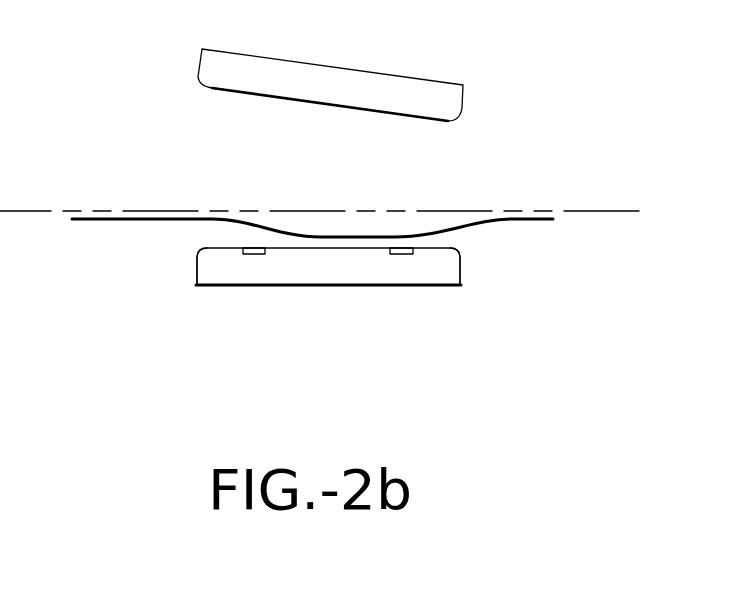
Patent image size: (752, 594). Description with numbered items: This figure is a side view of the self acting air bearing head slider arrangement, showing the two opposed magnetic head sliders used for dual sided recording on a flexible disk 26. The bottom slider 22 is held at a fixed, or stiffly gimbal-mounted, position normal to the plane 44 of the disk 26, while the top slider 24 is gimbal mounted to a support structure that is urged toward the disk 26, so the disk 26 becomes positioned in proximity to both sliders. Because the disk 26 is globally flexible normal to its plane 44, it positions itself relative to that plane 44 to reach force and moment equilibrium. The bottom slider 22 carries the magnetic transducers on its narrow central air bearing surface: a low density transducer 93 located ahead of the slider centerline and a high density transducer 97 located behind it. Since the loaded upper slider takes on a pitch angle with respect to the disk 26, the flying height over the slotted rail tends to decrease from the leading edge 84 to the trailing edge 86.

The top slider 24 is at (437, 83).
The plane of the disk 44 is at (578, 211).
The flexible disk 26 is at (522, 222).
The bottom slider 22 is at (461, 284).
The leading edge 84 is at (197, 275).
The trailing edge 86 is at (462, 267).
The low density transducer 93 is at (252, 254).
The high density transducer 97 is at (398, 254).